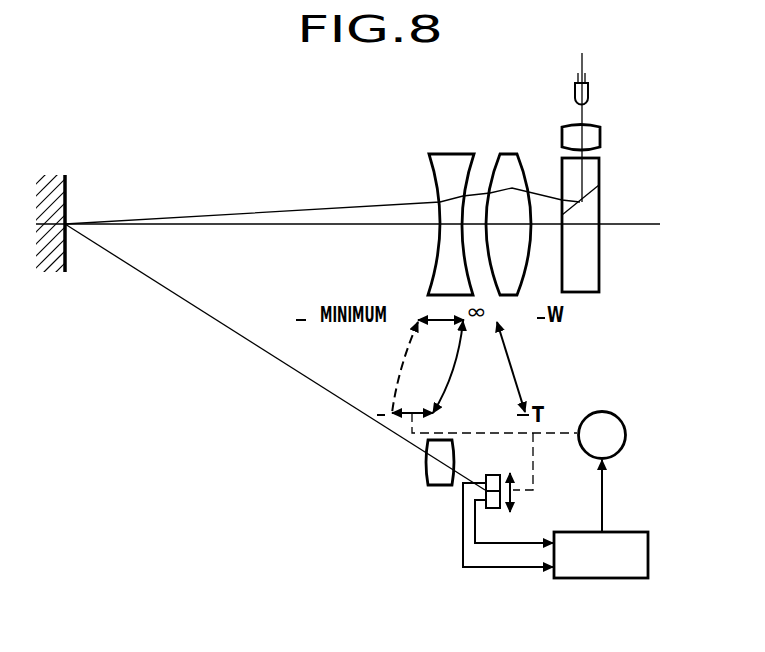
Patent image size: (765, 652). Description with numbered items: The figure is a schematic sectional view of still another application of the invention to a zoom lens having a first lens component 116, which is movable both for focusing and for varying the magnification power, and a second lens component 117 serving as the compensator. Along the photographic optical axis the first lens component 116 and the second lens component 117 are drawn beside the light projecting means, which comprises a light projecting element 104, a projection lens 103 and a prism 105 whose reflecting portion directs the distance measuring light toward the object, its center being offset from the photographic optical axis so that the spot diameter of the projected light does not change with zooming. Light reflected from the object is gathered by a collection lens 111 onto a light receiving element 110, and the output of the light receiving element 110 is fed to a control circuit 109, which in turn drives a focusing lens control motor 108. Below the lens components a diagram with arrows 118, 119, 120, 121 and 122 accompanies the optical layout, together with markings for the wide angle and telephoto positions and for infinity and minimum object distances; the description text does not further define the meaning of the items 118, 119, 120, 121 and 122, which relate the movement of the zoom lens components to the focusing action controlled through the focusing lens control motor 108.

The projection lens 103 is at (597, 124).
The light projecting element 104 is at (590, 92).
The prism 105 is at (598, 170).
The focusing lens control motor 108 is at (606, 412).
The control circuit 109 is at (630, 531).
The light receiving element 110 is at (494, 509).
The collection lens 111 is at (434, 487).
The first lens component 116 is at (453, 157).
The second lens component 117 is at (509, 160).
The zoom movement arrow 118 is at (510, 358).
The cam curve 119 is at (445, 378).
The cam curve (minimum) 120 is at (400, 368).
The cam displacement arrow (infinity) 121 is at (442, 318).
The cam displacement arrow (minimum) 122 is at (405, 412).